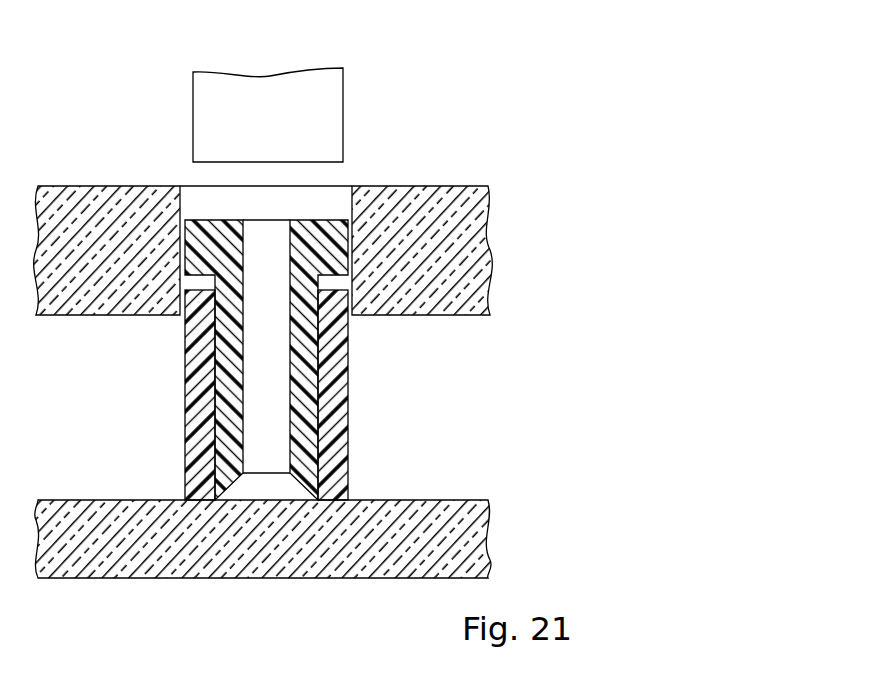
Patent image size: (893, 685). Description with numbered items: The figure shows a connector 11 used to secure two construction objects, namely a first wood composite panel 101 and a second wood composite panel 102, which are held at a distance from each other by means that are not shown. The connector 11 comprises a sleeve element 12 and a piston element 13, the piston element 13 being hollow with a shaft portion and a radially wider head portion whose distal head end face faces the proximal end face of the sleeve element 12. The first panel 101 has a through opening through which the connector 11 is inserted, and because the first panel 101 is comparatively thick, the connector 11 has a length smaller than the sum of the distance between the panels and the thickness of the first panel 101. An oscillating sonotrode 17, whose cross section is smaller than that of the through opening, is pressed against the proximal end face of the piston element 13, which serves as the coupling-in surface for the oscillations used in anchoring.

The connector 11 is at (158, 373).
The sleeve element 12 is at (340, 401).
The piston element 13 is at (310, 232).
The sonotrode 17 is at (323, 98).
The first wood composite panel 101 is at (457, 247).
The second wood composite panel 102 is at (455, 520).